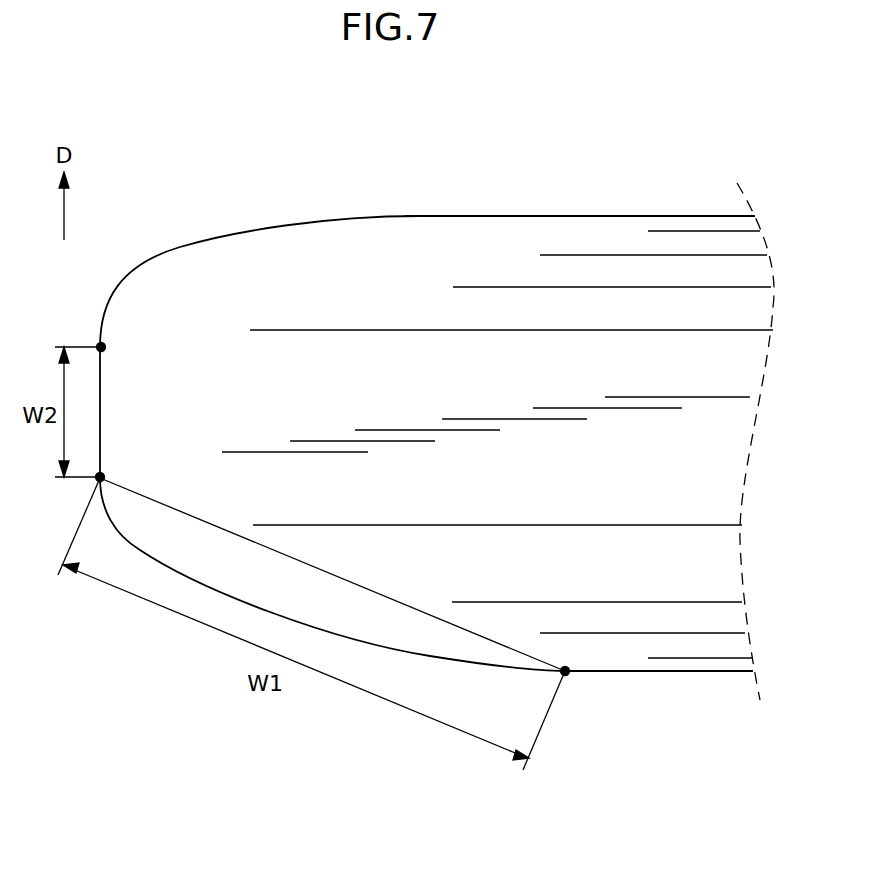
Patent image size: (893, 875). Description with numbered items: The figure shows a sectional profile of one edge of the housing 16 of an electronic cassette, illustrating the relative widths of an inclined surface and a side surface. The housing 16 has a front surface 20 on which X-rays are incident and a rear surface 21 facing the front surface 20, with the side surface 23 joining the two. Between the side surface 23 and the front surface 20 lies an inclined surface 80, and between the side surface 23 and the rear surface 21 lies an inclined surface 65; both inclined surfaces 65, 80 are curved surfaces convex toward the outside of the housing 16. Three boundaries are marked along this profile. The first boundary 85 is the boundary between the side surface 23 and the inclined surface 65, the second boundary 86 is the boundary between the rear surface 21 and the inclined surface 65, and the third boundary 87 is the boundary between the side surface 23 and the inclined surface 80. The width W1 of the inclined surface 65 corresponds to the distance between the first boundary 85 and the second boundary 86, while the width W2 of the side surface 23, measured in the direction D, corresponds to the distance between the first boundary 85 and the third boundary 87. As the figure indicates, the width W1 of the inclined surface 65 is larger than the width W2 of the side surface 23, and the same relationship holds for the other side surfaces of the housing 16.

The housing 16 is at (420, 215).
The front surface 20 is at (603, 216).
The rear surface 21 is at (680, 674).
The side surface 23 is at (108, 428).
The inclined surface 65 is at (402, 655).
The inclined surface 80 is at (180, 247).
The first boundary 85 is at (107, 476).
The second boundary 86 is at (567, 676).
The third boundary 87 is at (106, 346).